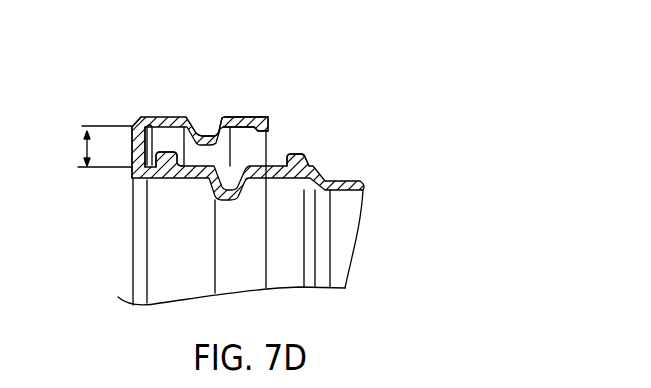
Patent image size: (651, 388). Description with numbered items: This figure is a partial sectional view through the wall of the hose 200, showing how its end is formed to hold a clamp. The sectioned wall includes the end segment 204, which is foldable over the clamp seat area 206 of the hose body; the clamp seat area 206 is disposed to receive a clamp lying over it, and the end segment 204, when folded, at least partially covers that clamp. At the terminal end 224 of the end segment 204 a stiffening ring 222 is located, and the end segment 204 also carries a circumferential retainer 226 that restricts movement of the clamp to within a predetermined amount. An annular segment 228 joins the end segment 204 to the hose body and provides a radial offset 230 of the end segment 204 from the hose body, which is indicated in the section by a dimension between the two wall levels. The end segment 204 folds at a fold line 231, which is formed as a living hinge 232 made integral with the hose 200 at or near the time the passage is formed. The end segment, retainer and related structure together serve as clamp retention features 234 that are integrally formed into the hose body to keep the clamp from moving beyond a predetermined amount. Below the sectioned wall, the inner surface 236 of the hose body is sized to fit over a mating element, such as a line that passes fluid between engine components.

The hose 200 is at (360, 257).
The end segment 204 is at (242, 117).
The clamp seat area 206 is at (270, 168).
The stiffening ring 222 is at (263, 140).
The terminal end 224 is at (266, 117).
The circumferential retainer 226 is at (197, 117).
The annular segment 228 is at (132, 128).
The radial offset 230 is at (78, 150).
The fold line 231 is at (140, 119).
The living hinge 232 is at (151, 154).
The clamp retention feature 234 is at (167, 142).
The inner surface 236 is at (173, 289).